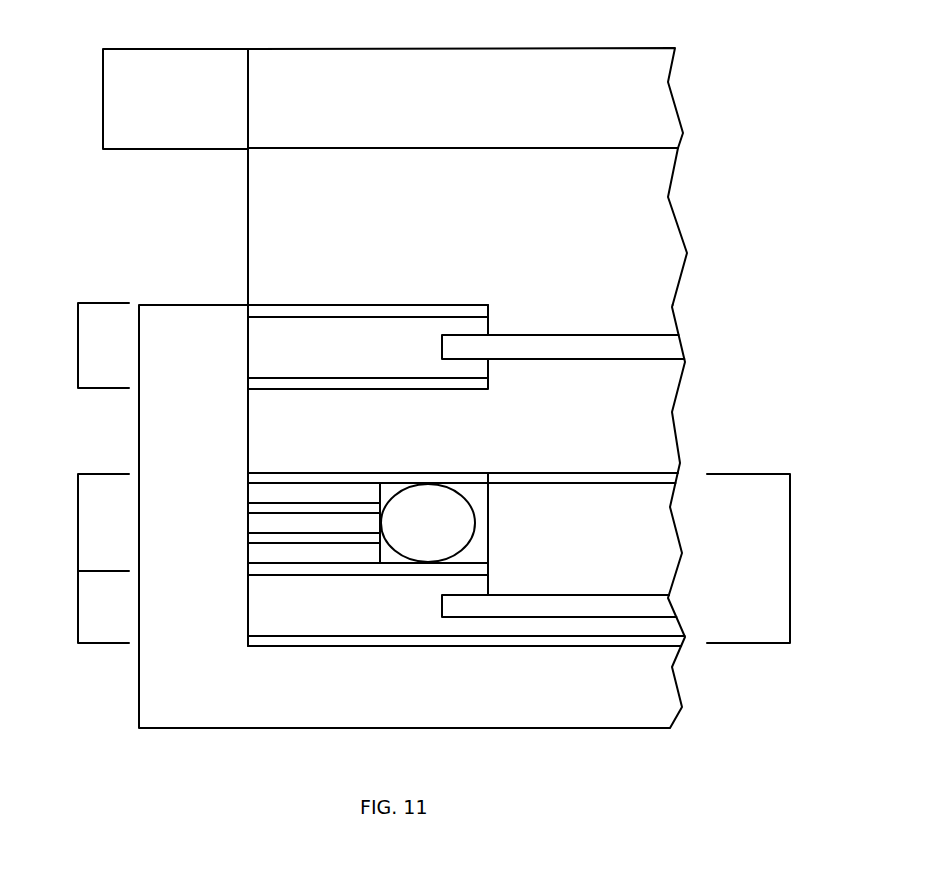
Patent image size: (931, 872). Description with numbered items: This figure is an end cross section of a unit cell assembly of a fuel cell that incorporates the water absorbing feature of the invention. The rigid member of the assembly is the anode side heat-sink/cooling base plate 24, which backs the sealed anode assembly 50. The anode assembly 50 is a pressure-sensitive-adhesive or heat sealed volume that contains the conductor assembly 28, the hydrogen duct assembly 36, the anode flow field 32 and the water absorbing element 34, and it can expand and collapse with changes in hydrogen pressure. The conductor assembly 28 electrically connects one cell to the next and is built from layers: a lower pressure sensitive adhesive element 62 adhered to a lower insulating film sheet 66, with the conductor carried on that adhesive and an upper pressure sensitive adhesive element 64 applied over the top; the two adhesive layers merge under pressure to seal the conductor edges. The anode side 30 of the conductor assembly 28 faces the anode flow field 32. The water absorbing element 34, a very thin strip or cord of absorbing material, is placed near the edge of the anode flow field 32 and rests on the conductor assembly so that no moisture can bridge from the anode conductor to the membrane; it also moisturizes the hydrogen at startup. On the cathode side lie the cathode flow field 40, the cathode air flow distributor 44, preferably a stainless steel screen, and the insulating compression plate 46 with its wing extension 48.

The anode side heat-sink/cooling base plate 24 is at (439, 516).
The conductor assembly 28 is at (256, 473).
The anode side of the conductor assembly 30 is at (568, 480).
The anode flow field 32 is at (487, 534).
The water absorbing element 34 is at (462, 529).
The hydrogen duct assembly 36 is at (74, 522).
The cathode flow field 40 is at (698, 389).
The cathode air flow distributor 44 is at (492, 397).
The insulating compression plate 46 is at (489, 98).
The wing extension 48 is at (172, 83).
The anode assembly 50 is at (772, 558).
The lower pressure sensitive adhesive element 62 is at (598, 611).
The upper pressure sensitive adhesive element 64 is at (473, 584).
The lower insulating film sheet 66 is at (490, 631).